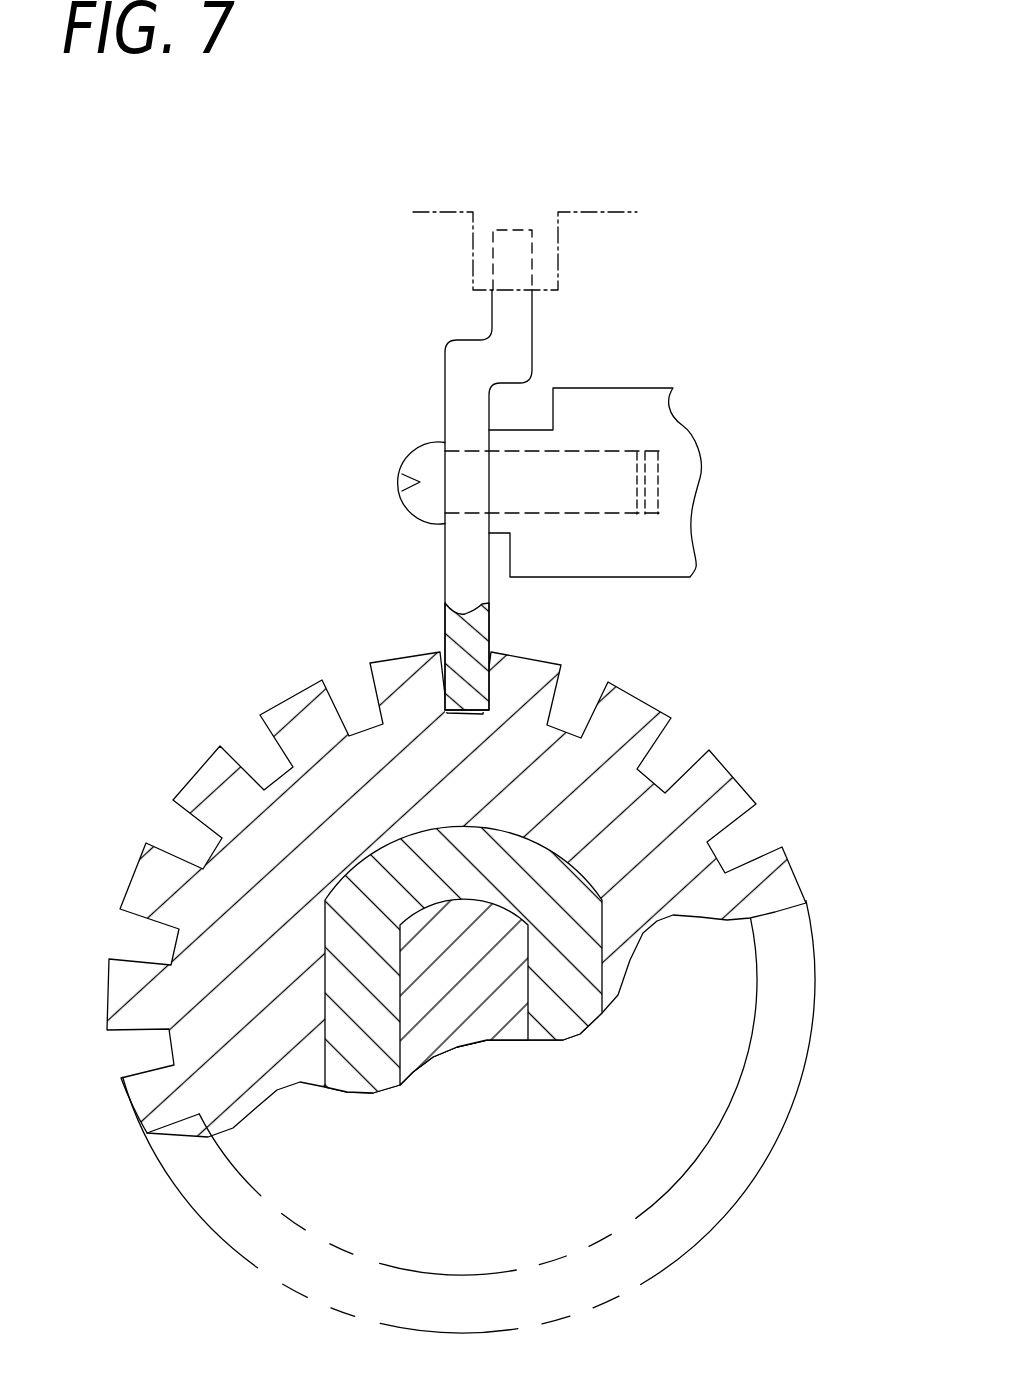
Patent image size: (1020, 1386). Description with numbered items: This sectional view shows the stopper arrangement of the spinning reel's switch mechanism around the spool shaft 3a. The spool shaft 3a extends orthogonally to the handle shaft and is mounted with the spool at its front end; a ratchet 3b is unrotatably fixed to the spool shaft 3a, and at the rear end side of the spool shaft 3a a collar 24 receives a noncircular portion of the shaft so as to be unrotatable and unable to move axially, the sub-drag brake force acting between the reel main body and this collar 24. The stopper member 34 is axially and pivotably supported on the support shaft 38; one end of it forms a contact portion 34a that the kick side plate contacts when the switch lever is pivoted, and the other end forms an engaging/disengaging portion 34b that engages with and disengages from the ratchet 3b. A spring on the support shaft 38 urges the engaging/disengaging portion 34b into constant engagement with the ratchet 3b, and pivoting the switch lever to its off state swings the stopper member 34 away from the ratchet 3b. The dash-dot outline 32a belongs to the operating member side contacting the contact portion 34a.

The spool shaft 3a is at (495, 1005).
The ratchet 3b is at (630, 715).
The collar 24 is at (582, 1003).
The opening 32a is at (473, 244).
The stopper member 34 is at (517, 338).
The contact portion 34a is at (518, 228).
The engaging/disengaging portion 34b is at (452, 617).
The support shaft 38 is at (423, 460).